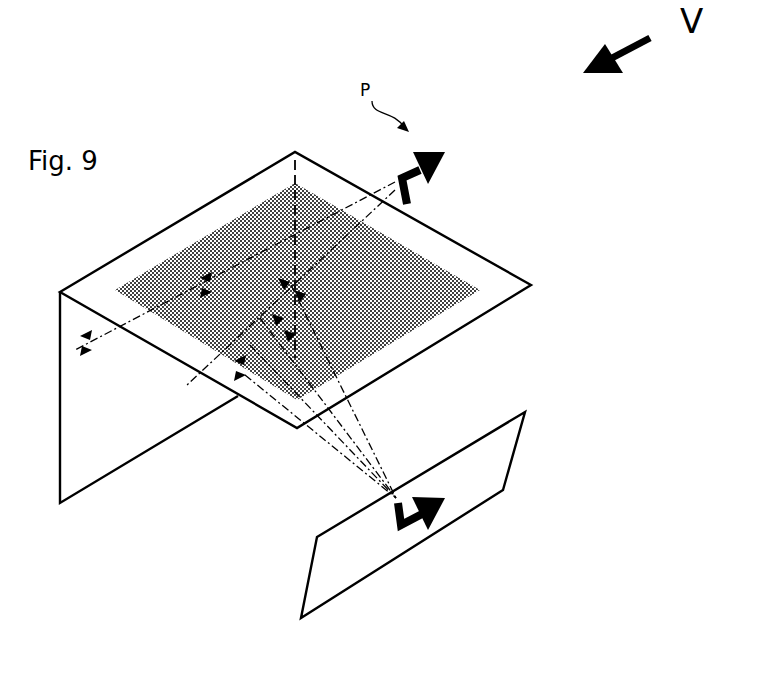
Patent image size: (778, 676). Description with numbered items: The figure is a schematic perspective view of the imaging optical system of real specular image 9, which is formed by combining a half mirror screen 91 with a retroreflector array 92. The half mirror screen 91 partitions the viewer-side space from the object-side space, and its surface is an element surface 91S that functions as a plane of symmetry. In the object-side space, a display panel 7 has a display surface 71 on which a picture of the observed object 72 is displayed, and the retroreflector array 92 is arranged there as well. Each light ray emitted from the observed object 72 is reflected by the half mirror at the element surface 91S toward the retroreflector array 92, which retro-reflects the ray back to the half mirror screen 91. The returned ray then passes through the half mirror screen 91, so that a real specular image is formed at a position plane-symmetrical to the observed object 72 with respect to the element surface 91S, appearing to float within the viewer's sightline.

The imaging optical system of real specular image 9 is at (330, 349).
The half mirror screen 91 is at (330, 290).
The element surface 91S is at (508, 303).
The retroreflector array 92 is at (98, 450).
The display panel 7 is at (399, 531).
The display surface 71 is at (300, 586).
The observed object 72 is at (368, 517).